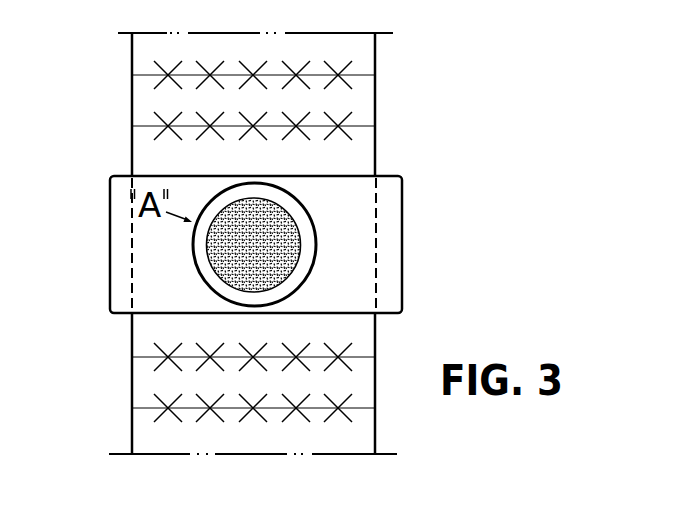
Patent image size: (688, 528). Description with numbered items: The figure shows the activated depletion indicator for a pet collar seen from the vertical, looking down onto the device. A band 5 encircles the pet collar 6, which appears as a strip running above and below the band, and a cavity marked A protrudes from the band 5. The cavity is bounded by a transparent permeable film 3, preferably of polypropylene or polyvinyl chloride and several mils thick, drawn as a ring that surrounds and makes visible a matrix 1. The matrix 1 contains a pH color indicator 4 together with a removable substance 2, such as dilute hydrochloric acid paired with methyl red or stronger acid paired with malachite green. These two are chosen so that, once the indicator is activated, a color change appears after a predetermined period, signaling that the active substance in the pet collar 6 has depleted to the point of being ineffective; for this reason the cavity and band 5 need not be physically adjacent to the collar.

The matrix 1 is at (280, 204).
The removable substance 2 is at (217, 222).
The transparent permeable film 3 is at (262, 191).
The pH color indicator 4 is at (234, 201).
The band 5 is at (377, 176).
The pet collar 6 is at (376, 97).